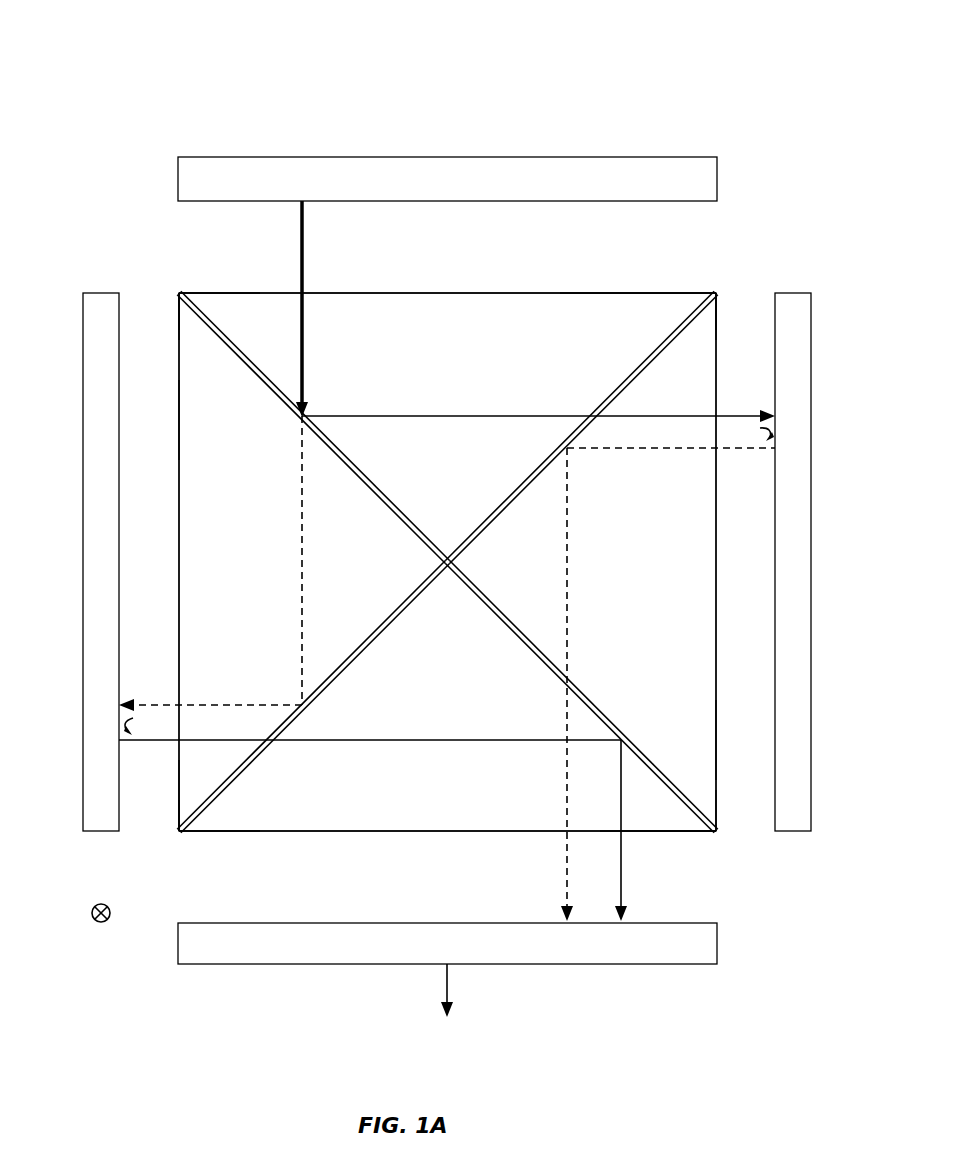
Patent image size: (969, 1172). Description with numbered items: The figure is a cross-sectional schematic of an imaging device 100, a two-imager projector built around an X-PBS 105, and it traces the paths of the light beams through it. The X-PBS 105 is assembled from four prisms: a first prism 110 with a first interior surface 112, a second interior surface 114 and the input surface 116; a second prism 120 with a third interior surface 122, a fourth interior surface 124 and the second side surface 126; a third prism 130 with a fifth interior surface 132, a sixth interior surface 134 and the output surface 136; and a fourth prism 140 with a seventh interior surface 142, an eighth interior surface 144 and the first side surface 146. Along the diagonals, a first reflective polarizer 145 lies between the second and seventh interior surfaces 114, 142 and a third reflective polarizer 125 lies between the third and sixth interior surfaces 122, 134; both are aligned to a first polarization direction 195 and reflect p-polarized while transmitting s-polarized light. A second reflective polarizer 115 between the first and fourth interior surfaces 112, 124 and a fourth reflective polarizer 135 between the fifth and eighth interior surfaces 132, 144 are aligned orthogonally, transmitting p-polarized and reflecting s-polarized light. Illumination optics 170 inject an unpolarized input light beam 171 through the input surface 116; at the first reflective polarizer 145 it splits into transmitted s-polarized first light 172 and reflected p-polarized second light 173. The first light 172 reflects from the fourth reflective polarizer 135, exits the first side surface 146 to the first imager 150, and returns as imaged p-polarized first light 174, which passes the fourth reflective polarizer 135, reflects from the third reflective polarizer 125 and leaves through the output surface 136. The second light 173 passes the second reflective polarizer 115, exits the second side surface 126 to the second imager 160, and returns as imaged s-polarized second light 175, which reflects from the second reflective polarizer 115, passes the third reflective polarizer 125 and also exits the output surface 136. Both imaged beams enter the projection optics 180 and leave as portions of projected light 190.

The imaging device 100 is at (182, 78).
The X-PBS 105 is at (160, 238).
The first prism 110 is at (673, 310).
The first interior surface 112 is at (703, 307).
The second interior surface 114 is at (182, 290).
The second reflective polarizer 115 is at (717, 293).
The input surface 116 is at (637, 293).
The second prism 120 is at (703, 788).
The third interior surface 122 is at (708, 815).
The fourth interior surface 124 is at (708, 307).
The third reflective polarizer 125 is at (715, 833).
The second side surface 126 is at (717, 742).
The third prism 130 is at (238, 817).
The fifth interior surface 132 is at (209, 812).
The sixth interior surface 134 is at (703, 818).
The fourth reflective polarizer 135 is at (178, 832).
The output surface 136 is at (652, 835).
The fourth prism 140 is at (192, 347).
The seventh interior surface 142 is at (190, 310).
The eighth interior surface 144 is at (210, 795).
The first reflective polarizer 145 is at (178, 292).
The first side surface 146 is at (180, 422).
The first imager 150 is at (102, 292).
The second imager 160 is at (793, 293).
The illumination optics 170 is at (717, 177).
The unpolarized input light beam 171 is at (303, 240).
The transmitted s-polarized first light 172 is at (300, 563).
The reflected p-polarized second light 173 is at (475, 416).
The imaged p-polarized first light 174 is at (403, 740).
The imaged s-polarized second light 175 is at (652, 448).
The projection optics 180 is at (717, 947).
The projected light 190 is at (449, 984).
The first polarization direction 195 is at (102, 923).